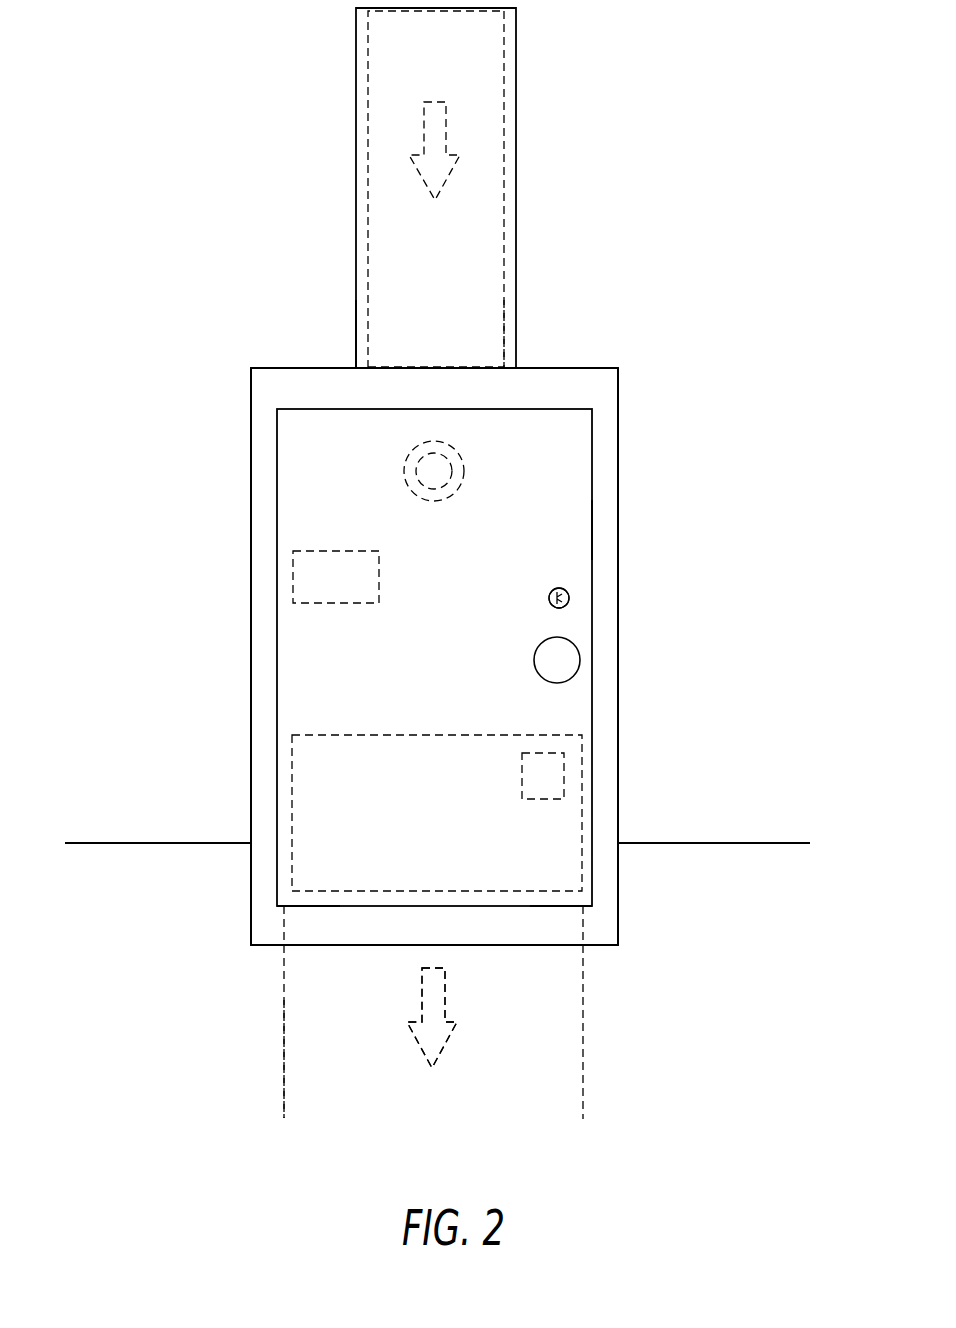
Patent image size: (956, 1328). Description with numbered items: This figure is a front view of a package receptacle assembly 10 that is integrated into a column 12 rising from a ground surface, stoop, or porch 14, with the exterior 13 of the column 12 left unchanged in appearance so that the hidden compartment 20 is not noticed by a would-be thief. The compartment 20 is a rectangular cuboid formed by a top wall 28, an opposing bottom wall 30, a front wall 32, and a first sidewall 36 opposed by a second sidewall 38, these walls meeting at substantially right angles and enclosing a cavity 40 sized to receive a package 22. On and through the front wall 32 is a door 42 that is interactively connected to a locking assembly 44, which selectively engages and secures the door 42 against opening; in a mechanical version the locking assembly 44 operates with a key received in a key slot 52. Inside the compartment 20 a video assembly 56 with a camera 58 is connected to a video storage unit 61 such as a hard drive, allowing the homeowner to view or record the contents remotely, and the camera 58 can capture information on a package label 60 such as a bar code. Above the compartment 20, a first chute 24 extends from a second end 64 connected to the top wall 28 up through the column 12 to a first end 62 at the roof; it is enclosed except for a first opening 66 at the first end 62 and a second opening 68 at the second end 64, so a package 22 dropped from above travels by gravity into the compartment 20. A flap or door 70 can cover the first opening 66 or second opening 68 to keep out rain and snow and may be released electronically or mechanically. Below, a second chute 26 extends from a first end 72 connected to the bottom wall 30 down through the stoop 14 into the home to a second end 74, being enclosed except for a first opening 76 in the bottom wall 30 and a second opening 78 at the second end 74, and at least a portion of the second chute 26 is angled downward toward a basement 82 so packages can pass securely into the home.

The package receptacle assembly 10 is at (735, 320).
The column 12 is at (523, 367).
The exterior 13 is at (618, 578).
The ground surface, stoop, or porch 14 is at (677, 852).
The compartment 20 is at (584, 700).
The package 22 is at (582, 773).
The first chute 24 is at (485, 275).
The second chute 26 is at (569, 1020).
The top wall 28 is at (592, 367).
The bottom wall 30 is at (602, 945).
The front wall 32 is at (603, 533).
The first sidewall 36 is at (619, 721).
The second sidewall 38 is at (250, 683).
The cavity 40 is at (463, 653).
The door 42 is at (528, 505).
The locking assembly 44 is at (530, 600).
The key slot 52 is at (568, 600).
The video assembly 56 is at (405, 487).
The camera 58 is at (425, 477).
The package label 60 is at (551, 791).
The video storage unit 61 is at (342, 603).
The first end 62 is at (503, 10).
The second end 64 is at (350, 367).
The first opening 66 is at (390, 10).
The second opening 68 is at (485, 367).
The flap or door 70 is at (432, 367).
The first end 72 is at (280, 906).
The second end 74 is at (284, 1116).
The first opening 76 is at (575, 906).
The second opening 78 is at (322, 1122).
The basement 82 is at (444, 1113).